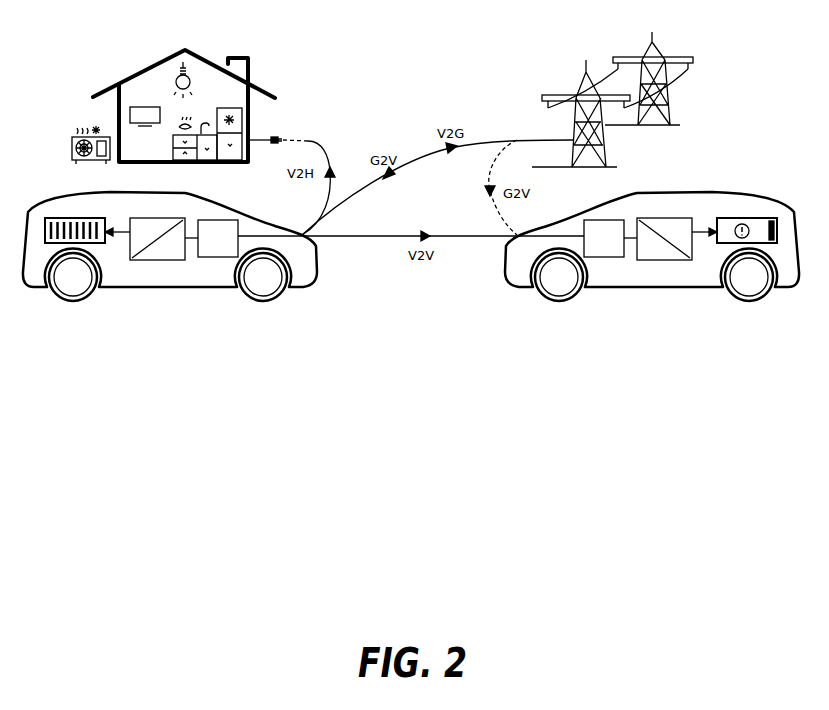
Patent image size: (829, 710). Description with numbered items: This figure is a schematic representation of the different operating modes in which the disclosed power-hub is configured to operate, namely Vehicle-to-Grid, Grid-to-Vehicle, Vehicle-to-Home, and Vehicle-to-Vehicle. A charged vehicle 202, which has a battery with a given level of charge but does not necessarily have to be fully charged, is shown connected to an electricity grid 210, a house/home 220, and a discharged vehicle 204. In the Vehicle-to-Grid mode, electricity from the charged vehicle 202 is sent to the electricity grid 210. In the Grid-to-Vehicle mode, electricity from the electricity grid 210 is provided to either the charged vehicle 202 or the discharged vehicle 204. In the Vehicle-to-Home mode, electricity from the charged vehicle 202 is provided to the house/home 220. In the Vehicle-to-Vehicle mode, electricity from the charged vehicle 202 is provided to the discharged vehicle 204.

The house/home 220 is at (148, 66).
The electricity grid 210 is at (671, 63).
The charged vehicle 202 is at (144, 287).
The discharged vehicle 204 is at (647, 287).